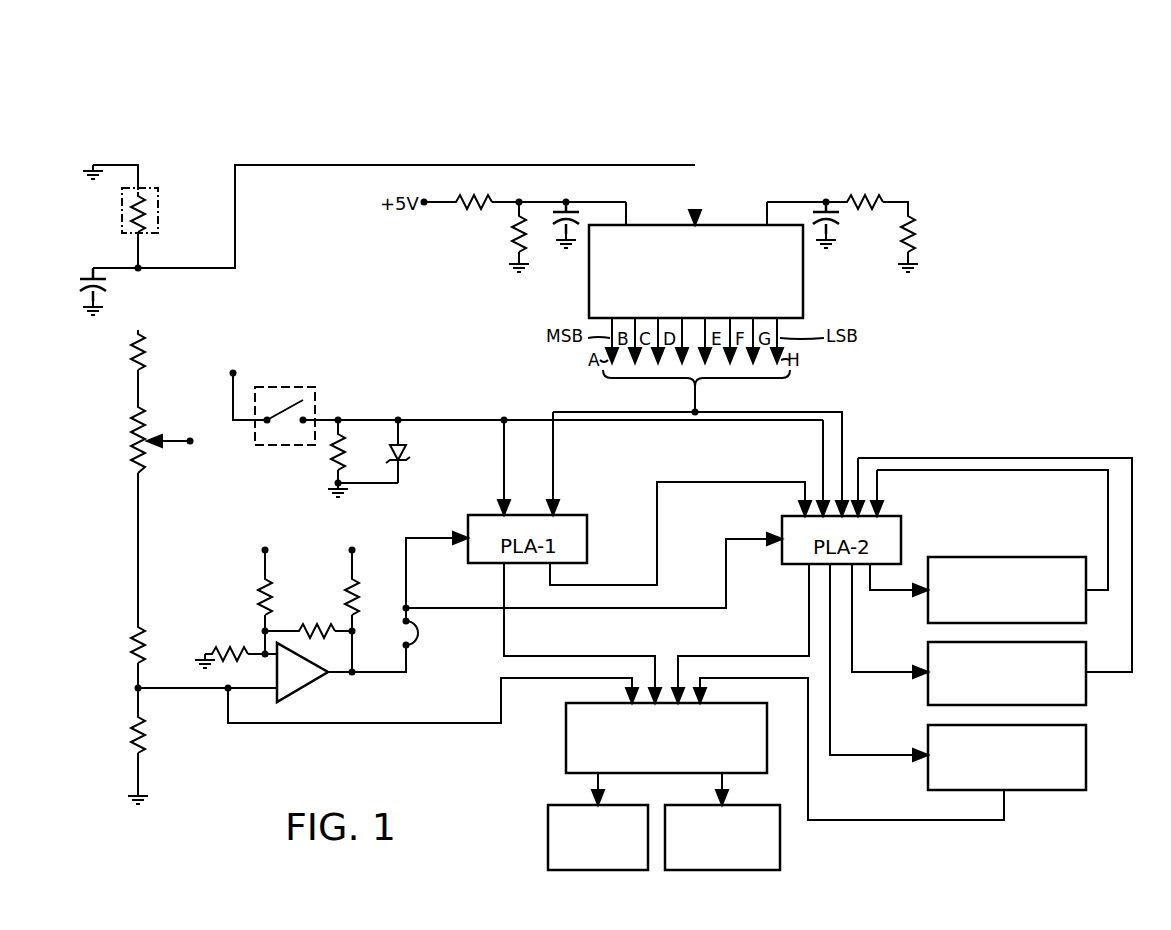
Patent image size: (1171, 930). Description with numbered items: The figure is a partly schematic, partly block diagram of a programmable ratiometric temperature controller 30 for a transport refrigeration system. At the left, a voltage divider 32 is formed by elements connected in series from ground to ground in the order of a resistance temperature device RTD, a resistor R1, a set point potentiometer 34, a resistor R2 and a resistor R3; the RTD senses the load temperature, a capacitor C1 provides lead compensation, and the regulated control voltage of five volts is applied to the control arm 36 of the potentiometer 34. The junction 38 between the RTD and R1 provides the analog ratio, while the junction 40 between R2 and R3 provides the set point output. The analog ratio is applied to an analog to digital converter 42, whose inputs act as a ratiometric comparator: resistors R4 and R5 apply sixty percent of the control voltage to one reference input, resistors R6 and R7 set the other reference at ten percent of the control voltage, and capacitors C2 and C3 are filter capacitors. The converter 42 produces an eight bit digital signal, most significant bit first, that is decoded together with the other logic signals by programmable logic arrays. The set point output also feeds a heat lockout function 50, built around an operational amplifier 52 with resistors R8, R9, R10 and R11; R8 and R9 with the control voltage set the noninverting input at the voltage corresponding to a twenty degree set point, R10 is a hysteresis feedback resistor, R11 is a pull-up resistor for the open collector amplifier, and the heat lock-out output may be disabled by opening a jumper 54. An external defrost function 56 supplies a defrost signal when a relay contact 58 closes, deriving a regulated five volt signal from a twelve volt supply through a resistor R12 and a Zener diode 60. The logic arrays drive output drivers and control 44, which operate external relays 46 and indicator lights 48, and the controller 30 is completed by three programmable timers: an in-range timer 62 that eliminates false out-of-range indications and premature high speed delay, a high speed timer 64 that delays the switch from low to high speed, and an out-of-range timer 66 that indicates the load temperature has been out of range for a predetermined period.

The ratiometric temperature controller 30 is at (455, 796).
The voltage divider 32 is at (138, 558).
The set point potentiometer 34 is at (150, 412).
The control arm 36 is at (170, 444).
The junction 38 is at (138, 268).
The junction 40 is at (130, 687).
The analog to digital converter 42 is at (728, 225).
The output drivers and control 44 is at (566, 726).
The external relays 46 is at (548, 826).
The indicator lights 48 is at (780, 830).
The heat lockout function 50 is at (345, 666).
The operational amplifier 52 is at (293, 692).
The jumper 54 is at (428, 627).
The external defrost function 56 is at (345, 378).
The relay contact 58 is at (262, 448).
The Zener diode 60 is at (408, 467).
The in-range timer 62 is at (1044, 557).
The high speed timer 64 is at (1086, 656).
The out-of-range timer 66 is at (1038, 790).
The resistance temperature device RTD is at (160, 200).
The capacitor C1 is at (122, 302).
The filter capacitor C2 is at (552, 228).
The filter capacitor C3 is at (840, 228).
The resistor R1 is at (150, 345).
The resistor R2 is at (148, 632).
The resistor R3 is at (126, 728).
The resistor R4 is at (478, 196).
The resistor R5 is at (508, 250).
The resistor R6 is at (872, 196).
The resistor R7 is at (916, 232).
The resistor R8 is at (262, 590).
The resistor R9 is at (222, 652).
The feedback resistor R10 is at (306, 630).
The pull-up resistor R11 is at (348, 590).
The resistor R12 is at (322, 478).